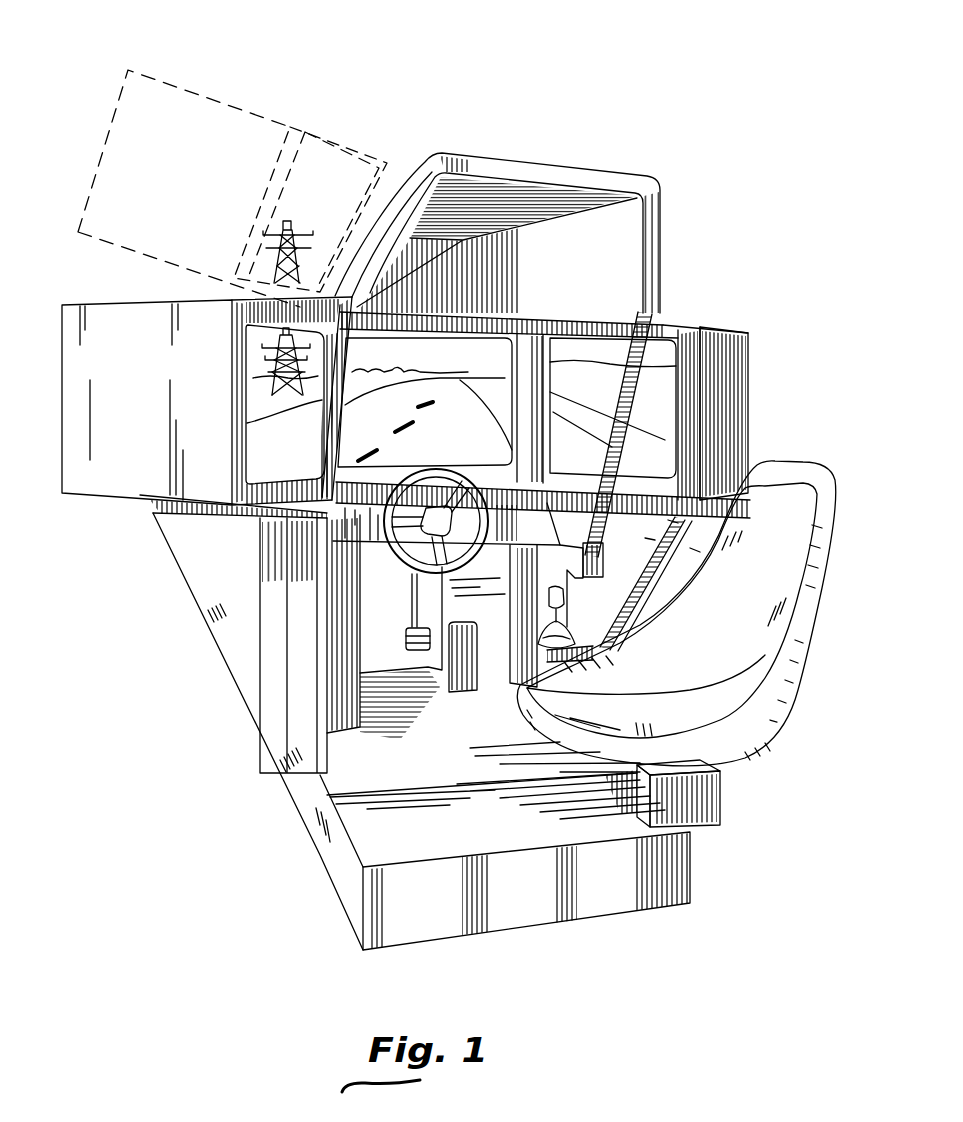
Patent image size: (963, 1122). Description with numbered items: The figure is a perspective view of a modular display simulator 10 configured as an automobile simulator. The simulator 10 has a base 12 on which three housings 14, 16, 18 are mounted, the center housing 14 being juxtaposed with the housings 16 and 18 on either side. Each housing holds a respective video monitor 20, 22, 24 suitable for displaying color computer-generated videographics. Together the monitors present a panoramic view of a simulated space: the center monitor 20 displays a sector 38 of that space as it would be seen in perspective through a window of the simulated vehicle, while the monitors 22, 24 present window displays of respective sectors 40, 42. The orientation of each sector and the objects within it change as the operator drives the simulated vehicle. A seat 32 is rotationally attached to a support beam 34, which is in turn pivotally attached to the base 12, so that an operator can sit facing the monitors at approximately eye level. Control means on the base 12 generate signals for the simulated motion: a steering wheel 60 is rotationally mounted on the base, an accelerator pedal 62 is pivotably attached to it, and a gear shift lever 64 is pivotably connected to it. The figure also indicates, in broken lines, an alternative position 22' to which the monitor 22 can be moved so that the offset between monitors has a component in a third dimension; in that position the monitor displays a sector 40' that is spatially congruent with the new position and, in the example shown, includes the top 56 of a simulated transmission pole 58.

The modular display simulator 10 is at (155, 626).
The base 12 is at (300, 720).
The housing 14 is at (483, 335).
The housing 16 is at (100, 303).
The housing 18 is at (728, 332).
The video monitor 20 is at (518, 325).
The video monitor 22 is at (168, 404).
The monitor position 22' is at (189, 166).
The video monitor 24 is at (688, 340).
The seat 32 is at (793, 660).
The support beam 34 is at (712, 800).
The sector 38 is at (436, 356).
The sector 40 is at (167, 412).
The sector 40' is at (310, 182).
The sector 42 is at (668, 426).
The top of simulated transmission pole 56 is at (293, 298).
The simulated transmission pole 58 is at (266, 352).
The steering wheel 60 is at (387, 550).
The accelerator pedal 62 is at (408, 645).
The gear shift lever 64 is at (567, 601).